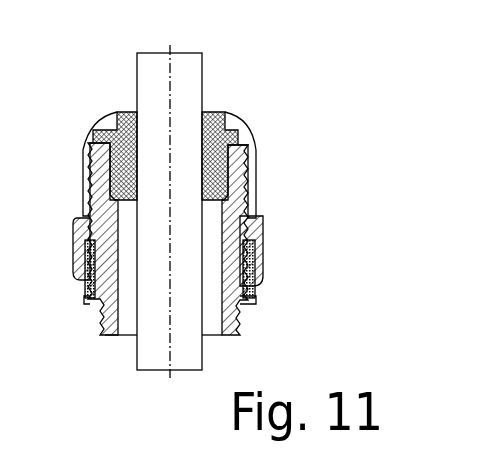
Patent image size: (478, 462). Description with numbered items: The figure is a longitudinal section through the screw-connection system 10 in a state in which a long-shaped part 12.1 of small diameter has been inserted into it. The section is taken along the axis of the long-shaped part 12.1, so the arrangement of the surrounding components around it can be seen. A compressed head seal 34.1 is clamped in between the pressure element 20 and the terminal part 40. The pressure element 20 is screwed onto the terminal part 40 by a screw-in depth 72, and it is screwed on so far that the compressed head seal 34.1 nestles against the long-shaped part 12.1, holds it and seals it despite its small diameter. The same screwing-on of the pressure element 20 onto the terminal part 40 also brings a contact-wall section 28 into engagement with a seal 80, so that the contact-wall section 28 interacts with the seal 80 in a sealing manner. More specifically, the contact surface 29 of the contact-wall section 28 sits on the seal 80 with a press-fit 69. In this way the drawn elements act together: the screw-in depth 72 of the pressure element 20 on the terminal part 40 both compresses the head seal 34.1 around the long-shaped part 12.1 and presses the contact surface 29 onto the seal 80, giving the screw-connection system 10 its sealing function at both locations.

The screw-connection system 10 is at (78, 50).
The long-shaped part 12.1 is at (190, 86).
The compressed head seal 34.1 is at (218, 142).
The pressure element 20 is at (250, 188).
The terminal part 40 is at (232, 229).
The contact-wall section 28 is at (261, 258).
The press-fit 69 is at (255, 281).
The seal 80 is at (250, 300).
The contact surface 29 is at (86, 268).
The screw-in depth 72 is at (76, 145).